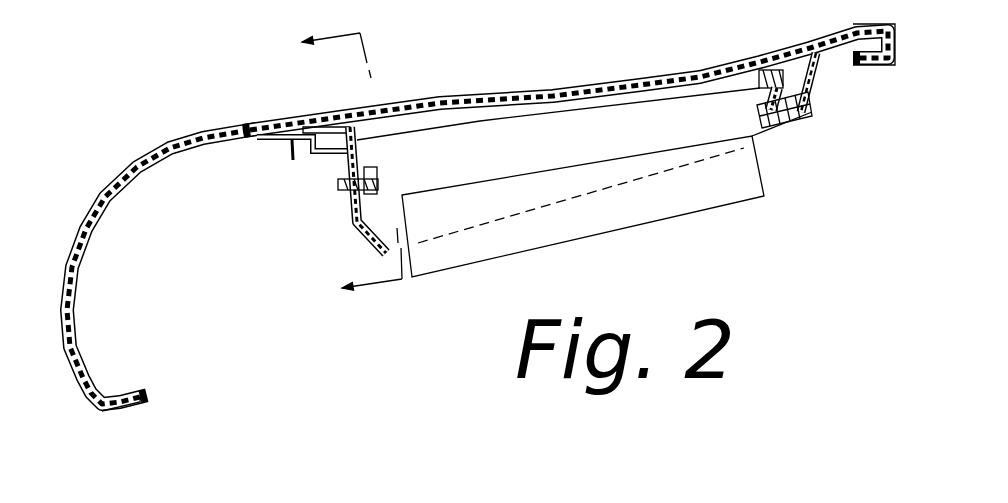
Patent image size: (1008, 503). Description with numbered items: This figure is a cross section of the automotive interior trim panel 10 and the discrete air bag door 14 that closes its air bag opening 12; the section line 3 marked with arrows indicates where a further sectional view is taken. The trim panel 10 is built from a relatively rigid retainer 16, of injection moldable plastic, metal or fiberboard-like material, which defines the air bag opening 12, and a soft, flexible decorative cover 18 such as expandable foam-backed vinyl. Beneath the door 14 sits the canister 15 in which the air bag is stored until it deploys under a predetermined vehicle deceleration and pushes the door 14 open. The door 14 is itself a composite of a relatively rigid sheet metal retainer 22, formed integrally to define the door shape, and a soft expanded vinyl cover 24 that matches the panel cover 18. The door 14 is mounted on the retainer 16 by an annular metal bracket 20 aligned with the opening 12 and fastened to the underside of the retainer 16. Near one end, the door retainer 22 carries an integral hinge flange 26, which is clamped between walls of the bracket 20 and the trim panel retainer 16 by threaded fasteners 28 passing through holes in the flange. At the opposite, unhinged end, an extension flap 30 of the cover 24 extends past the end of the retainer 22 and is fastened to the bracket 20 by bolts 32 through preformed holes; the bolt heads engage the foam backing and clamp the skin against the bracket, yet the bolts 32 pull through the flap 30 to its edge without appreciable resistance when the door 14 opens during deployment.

The interior trim panel 10 is at (481, 208).
The air bag opening 12 is at (584, 129).
The air bag door 14 is at (569, 68).
The canister 15 is at (672, 210).
The retainer 16 is at (83, 344).
The cover 18 is at (135, 157).
The annular metal bracket 20 is at (363, 230).
The retainer 22 is at (482, 113).
The cover 24 is at (565, 89).
The hinge flange 26 is at (755, 90).
The threaded fasteners 28 is at (771, 122).
The extension flap 30 is at (357, 139).
The bolts 32 is at (342, 188).
The section line 3- 3 is at (352, 187).